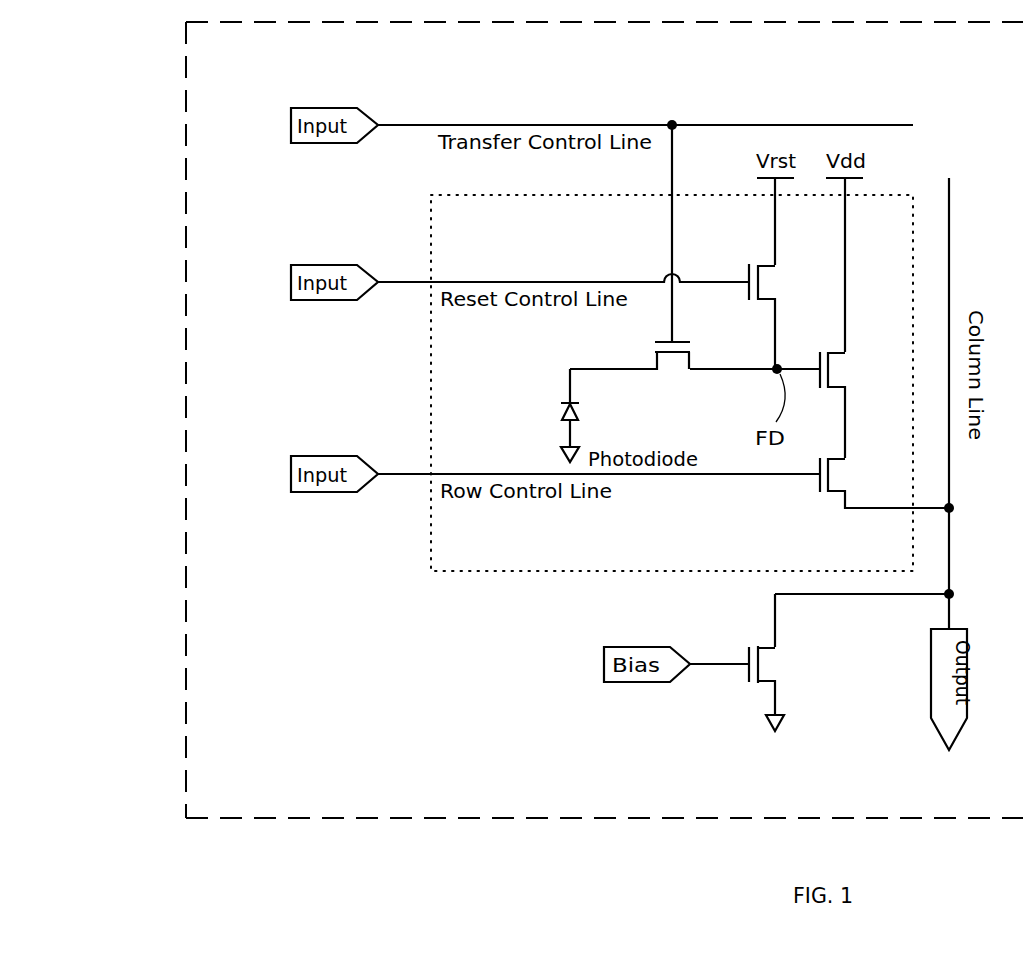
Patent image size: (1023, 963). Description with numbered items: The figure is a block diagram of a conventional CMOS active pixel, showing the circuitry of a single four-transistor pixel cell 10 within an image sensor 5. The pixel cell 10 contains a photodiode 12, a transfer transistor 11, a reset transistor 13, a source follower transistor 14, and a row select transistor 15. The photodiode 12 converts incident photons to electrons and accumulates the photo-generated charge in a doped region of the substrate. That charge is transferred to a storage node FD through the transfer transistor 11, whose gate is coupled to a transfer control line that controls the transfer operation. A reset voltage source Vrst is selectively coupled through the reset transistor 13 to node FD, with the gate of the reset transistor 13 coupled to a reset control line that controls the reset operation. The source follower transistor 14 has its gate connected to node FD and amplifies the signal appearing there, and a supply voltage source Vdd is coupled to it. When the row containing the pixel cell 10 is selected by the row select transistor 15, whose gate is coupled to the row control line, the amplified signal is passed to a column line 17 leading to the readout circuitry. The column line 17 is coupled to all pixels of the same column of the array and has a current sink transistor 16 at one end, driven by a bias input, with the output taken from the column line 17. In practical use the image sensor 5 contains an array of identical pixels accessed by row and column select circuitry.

The image sensor 5 is at (228, 52).
The pixel 4T cell 10 is at (479, 223).
The transfer transistor 11 is at (675, 357).
The photodiode 12 is at (578, 420).
The reset transistor 13 is at (762, 284).
The source follower transistor 14 is at (833, 370).
The row select transistor 15 is at (833, 474).
The current sink transistor 16 is at (762, 665).
The column line 17 is at (949, 569).